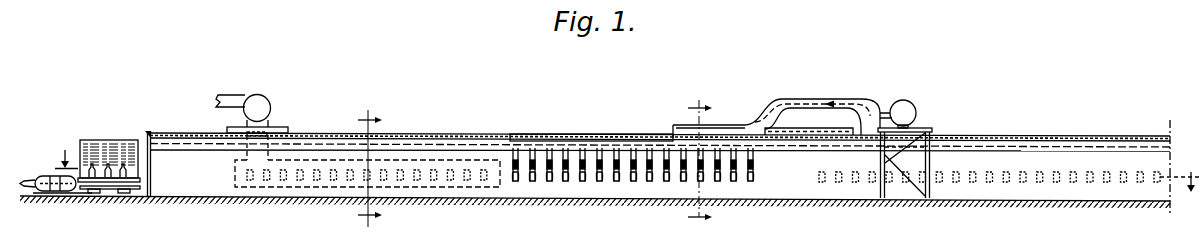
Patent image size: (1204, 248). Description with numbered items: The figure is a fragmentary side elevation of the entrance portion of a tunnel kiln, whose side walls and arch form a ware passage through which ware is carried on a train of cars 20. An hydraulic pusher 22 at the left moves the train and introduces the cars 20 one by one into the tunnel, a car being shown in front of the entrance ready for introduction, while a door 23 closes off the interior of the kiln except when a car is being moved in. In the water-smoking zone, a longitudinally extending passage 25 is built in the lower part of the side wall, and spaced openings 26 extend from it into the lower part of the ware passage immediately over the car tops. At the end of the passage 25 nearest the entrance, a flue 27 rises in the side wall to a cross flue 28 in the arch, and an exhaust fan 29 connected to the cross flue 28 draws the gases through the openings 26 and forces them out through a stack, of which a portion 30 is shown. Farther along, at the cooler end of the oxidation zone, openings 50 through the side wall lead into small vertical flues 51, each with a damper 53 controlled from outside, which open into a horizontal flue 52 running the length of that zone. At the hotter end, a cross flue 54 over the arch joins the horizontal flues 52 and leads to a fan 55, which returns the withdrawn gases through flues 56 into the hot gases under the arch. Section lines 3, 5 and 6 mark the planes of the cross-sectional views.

The section line 3- 3 is at (626, 167).
The section line 5- 5 is at (365, 167).
The section line 6- 6 is at (692, 161).
The cars 20 is at (113, 196).
The hydraulic pusher 22 is at (62, 196).
The doors 23 is at (148, 133).
The longitudinally extending passages 25 is at (407, 170).
The spaced openings 26 is at (437, 181).
The flues 27 is at (262, 152).
The cross flue 28 is at (270, 120).
The exhaust fan 29 is at (260, 103).
The stack portion 30 is at (222, 93).
The openings 50 is at (551, 184).
The vertical flue 51 is at (577, 153).
The horizontal flue 52 is at (623, 140).
The damper 53 is at (612, 165).
The cross flue 54 is at (907, 133).
The fan 55 is at (904, 100).
The flues 56 is at (860, 108).